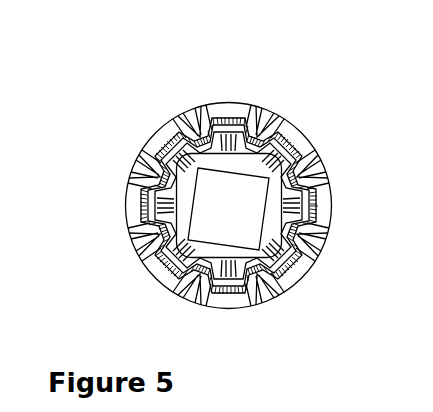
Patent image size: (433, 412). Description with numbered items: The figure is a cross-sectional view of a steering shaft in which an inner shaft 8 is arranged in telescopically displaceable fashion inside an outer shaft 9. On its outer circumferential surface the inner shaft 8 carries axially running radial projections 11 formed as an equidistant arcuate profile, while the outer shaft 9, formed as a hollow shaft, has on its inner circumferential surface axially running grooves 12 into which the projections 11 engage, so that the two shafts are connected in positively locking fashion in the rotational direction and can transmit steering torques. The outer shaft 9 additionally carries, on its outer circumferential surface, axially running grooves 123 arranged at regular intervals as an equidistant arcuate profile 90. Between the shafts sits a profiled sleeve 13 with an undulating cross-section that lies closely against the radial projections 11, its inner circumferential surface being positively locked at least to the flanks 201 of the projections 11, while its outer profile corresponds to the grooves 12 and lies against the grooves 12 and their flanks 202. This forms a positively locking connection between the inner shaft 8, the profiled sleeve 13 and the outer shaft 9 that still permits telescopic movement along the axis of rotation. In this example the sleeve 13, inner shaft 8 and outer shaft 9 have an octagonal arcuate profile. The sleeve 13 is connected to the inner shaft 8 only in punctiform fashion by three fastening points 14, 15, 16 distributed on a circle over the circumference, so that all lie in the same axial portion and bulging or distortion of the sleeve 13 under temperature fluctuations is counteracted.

The inner shaft 8 is at (292, 273).
The outer shaft 9 is at (308, 155).
The radial projections 11 is at (150, 261).
The grooves 12 is at (297, 162).
The profiled sleeve 13 is at (235, 130).
The fastening point 14 is at (206, 112).
The fastening point 15 is at (249, 283).
The fastening point 16 is at (313, 258).
The arcuate profile 90 is at (193, 110).
The grooves 123 is at (273, 138).
The flanks 201 is at (303, 268).
The flanks 202 is at (156, 214).